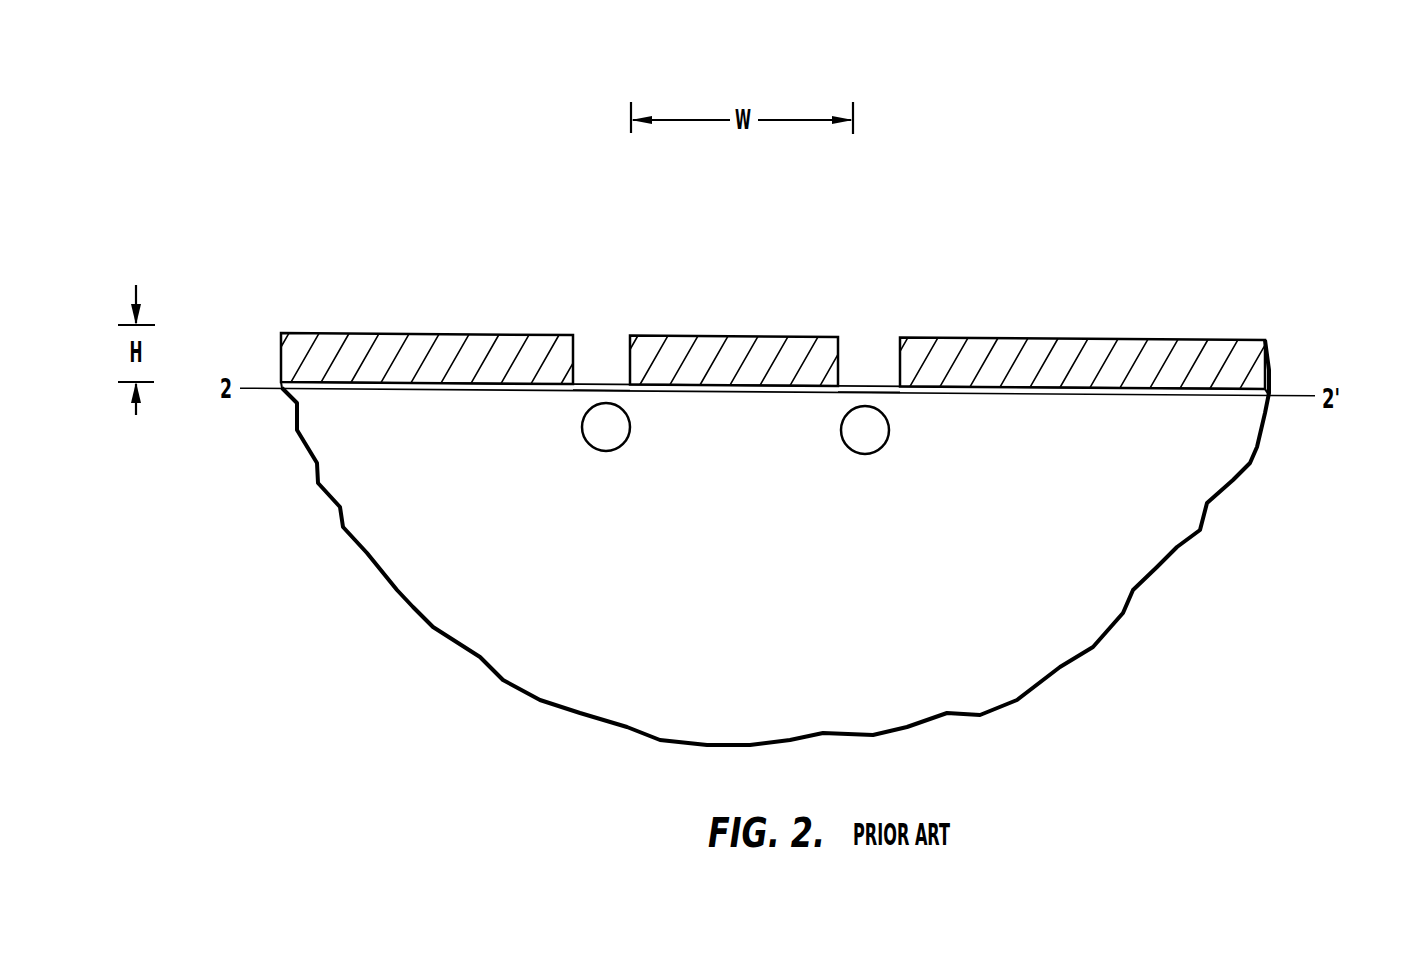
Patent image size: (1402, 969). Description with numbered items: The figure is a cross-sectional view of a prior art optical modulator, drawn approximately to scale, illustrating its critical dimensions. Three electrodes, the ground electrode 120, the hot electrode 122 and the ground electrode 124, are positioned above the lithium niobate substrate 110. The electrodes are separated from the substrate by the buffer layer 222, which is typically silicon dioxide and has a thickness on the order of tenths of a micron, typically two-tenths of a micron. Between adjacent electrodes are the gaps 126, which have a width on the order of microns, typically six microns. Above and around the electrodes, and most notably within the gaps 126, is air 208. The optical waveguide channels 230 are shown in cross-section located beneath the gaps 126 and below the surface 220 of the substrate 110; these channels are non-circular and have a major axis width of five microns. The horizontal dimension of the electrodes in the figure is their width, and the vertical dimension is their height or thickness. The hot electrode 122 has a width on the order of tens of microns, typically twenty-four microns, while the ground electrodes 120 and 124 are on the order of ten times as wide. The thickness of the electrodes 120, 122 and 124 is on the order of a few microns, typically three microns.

The lithium niobate substrate 110 is at (1280, 473).
The ground electrode 120 is at (315, 352).
The hot electrode 122 is at (727, 352).
The ground electrode 124 is at (1027, 352).
The gaps 126 is at (595, 340).
The air 208 is at (1312, 108).
The surface of substrate 220 is at (1120, 394).
The buffer layer 222 is at (273, 380).
The optical waveguide channels 230 is at (620, 447).